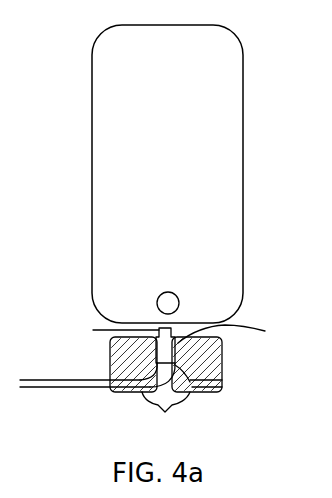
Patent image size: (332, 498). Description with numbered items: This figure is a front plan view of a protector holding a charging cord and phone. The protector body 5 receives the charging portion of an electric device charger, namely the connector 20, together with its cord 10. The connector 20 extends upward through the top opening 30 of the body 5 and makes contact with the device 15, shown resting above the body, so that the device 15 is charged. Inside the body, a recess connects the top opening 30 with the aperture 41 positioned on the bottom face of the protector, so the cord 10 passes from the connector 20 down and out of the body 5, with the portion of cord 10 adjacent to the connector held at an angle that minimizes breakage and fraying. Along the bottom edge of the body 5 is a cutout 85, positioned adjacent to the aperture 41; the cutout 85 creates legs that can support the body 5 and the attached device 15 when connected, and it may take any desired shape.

The device 15 is at (106, 248).
The top opening 30 is at (95, 330).
The connector 20 is at (265, 331).
The body 5 is at (222, 368).
The cord 10 is at (62, 388).
The aperture 41 is at (158, 371).
The cutout 85 is at (166, 415).